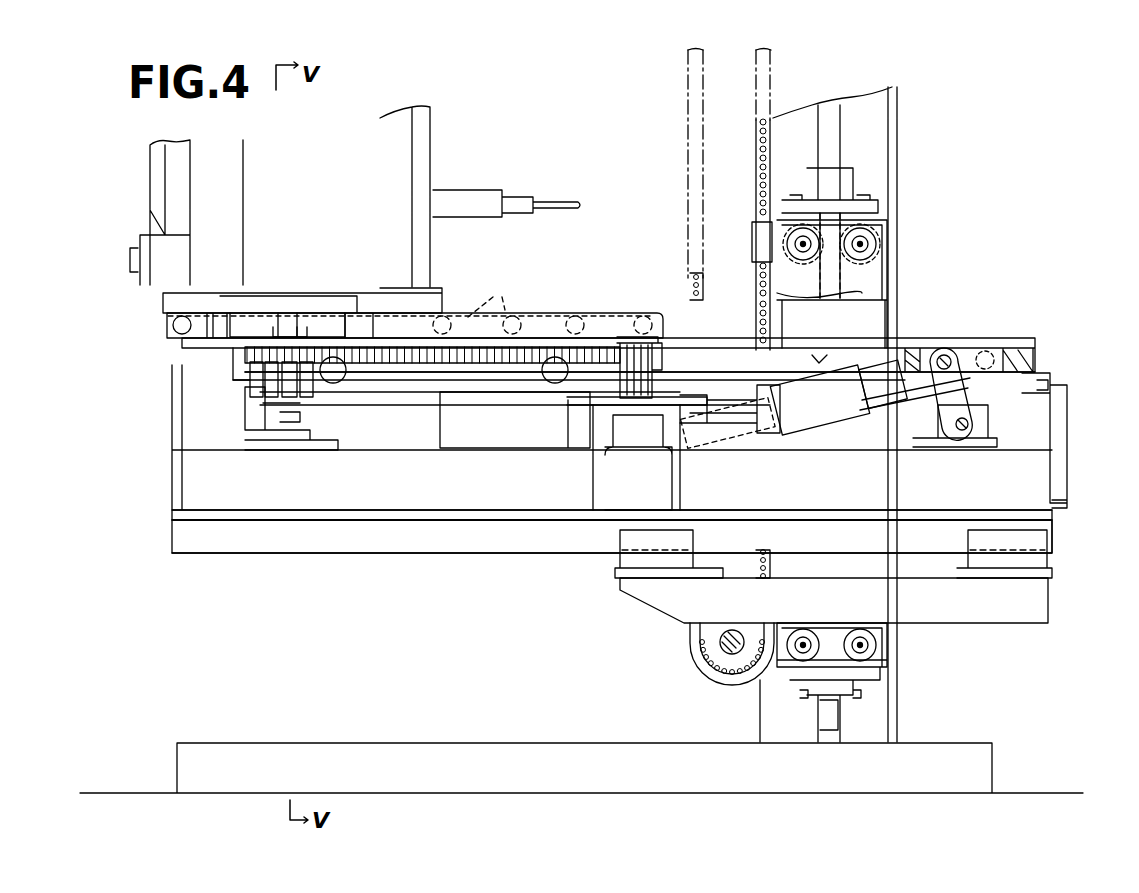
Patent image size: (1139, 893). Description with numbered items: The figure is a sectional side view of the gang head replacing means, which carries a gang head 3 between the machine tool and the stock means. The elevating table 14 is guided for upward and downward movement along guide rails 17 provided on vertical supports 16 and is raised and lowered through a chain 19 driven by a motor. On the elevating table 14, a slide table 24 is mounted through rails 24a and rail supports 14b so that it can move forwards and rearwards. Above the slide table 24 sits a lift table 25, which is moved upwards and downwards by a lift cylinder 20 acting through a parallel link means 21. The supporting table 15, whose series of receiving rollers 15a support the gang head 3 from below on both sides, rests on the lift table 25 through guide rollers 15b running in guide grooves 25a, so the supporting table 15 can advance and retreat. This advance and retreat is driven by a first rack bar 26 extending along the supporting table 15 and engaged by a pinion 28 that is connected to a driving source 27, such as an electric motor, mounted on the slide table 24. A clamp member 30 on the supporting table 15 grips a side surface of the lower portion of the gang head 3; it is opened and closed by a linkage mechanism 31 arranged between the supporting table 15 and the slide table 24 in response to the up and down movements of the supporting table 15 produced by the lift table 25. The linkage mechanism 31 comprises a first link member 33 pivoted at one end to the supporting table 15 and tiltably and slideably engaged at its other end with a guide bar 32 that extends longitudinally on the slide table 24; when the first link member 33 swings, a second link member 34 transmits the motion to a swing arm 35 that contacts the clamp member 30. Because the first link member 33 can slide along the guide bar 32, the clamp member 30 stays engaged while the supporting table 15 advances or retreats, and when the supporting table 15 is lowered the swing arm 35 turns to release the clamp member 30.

The gang head 3 is at (395, 143).
The elevating table 14 is at (970, 613).
The rail support 14b is at (635, 542).
The supporting table 15 is at (535, 320).
The receiving rollers 15a is at (498, 293).
The guide rollers 15b is at (342, 378).
The vertical support 16 is at (883, 158).
The guide rail 17 is at (830, 123).
The chain 19 is at (755, 147).
The lift cylinder 20 is at (800, 420).
The parallel link means 21 is at (947, 397).
The slide table 24 is at (417, 500).
The rail 24a is at (473, 533).
The lift table 25 is at (873, 350).
The guide groove 25a is at (822, 357).
The first rack bar 26 is at (588, 352).
The driving source 27 is at (620, 473).
The pinion 28 is at (638, 350).
The clamp member 30 is at (263, 308).
The linkage mechanism 31 is at (239, 394).
The guide bar 32 is at (467, 407).
The first link member 33 is at (290, 400).
The second link member 34 is at (277, 330).
The swing arm 35 is at (288, 320).